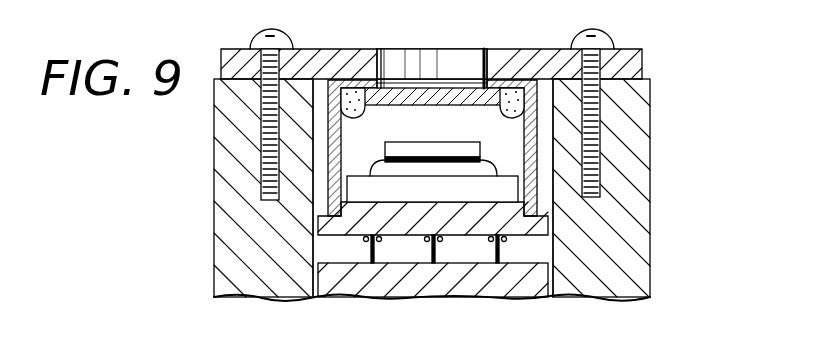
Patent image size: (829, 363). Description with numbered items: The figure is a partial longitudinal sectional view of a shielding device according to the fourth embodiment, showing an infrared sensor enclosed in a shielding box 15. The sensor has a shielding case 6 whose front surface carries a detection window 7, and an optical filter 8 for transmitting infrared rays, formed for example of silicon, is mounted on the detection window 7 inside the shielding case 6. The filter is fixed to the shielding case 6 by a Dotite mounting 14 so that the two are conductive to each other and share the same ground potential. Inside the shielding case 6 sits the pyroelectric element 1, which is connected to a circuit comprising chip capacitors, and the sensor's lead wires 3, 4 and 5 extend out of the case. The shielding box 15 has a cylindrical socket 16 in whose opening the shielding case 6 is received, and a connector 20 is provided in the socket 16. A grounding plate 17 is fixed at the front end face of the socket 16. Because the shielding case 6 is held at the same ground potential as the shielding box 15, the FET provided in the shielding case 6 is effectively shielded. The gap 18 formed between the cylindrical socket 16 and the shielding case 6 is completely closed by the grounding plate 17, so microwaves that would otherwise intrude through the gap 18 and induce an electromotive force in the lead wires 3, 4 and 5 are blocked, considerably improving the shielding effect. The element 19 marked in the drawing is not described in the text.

The pyroelectric element 1 is at (428, 146).
The lead wire 3 is at (370, 251).
The lead wire 4 is at (431, 251).
The lead wire 5 is at (495, 251).
The shielding case 6 is at (530, 119).
The detection window 7 is at (479, 80).
The optical filter 8 is at (428, 95).
The Dotite mounting 14 is at (346, 92).
The shielding box 15 is at (645, 277).
The cylindrical socket 16 is at (662, 135).
The grounding plate 17 is at (516, 62).
The gap 18 is at (317, 203).
The window film 19 is at (385, 76).
The connector 20 is at (467, 290).